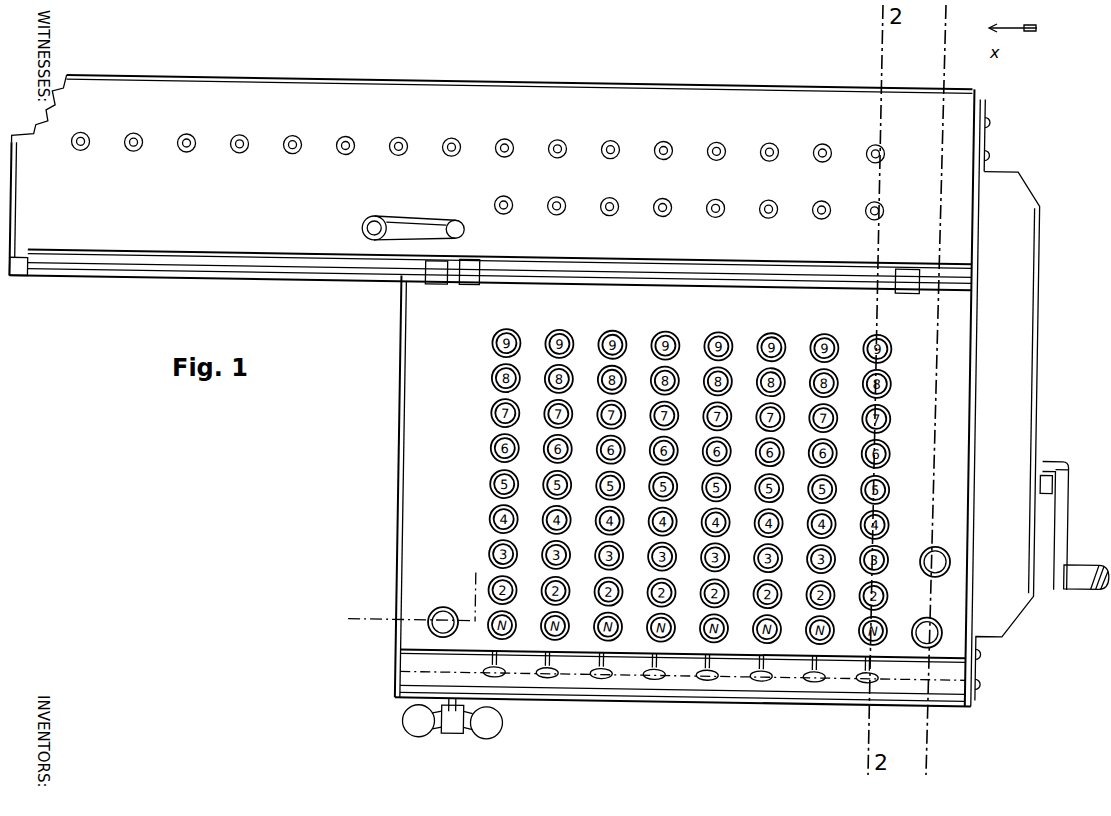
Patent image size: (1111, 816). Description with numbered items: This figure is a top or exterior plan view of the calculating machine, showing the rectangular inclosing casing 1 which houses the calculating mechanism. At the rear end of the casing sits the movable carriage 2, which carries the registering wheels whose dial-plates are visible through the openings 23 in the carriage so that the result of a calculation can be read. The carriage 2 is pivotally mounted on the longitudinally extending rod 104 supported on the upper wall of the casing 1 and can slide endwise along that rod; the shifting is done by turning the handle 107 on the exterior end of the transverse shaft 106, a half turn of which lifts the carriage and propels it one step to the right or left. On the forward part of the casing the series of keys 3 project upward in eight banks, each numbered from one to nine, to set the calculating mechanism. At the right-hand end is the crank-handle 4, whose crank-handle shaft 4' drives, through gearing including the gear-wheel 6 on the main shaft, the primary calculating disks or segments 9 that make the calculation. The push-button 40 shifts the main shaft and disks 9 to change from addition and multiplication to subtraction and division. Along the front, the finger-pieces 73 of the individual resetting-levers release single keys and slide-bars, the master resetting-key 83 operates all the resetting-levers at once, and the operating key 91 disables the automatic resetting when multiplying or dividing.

The inclosing casing 1 is at (958, 424).
The movable carriage 2 is at (439, 104).
The keys 3 is at (596, 476).
The crank-handle 4 is at (1070, 525).
The crank-handle shaft 4' is at (1087, 532).
The gear-wheel 6 is at (946, 389).
The primary calculating disks or segments 9 is at (410, 589).
The openings 23 is at (291, 141).
The push-button 40 is at (438, 600).
The finger-pieces 73 is at (605, 682).
The master resetting-key 83 is at (942, 623).
The operating key 91 is at (949, 552).
The longitudinally extending rod 104 is at (278, 284).
The transverse shaft 106 is at (445, 704).
The handle 107 is at (413, 731).